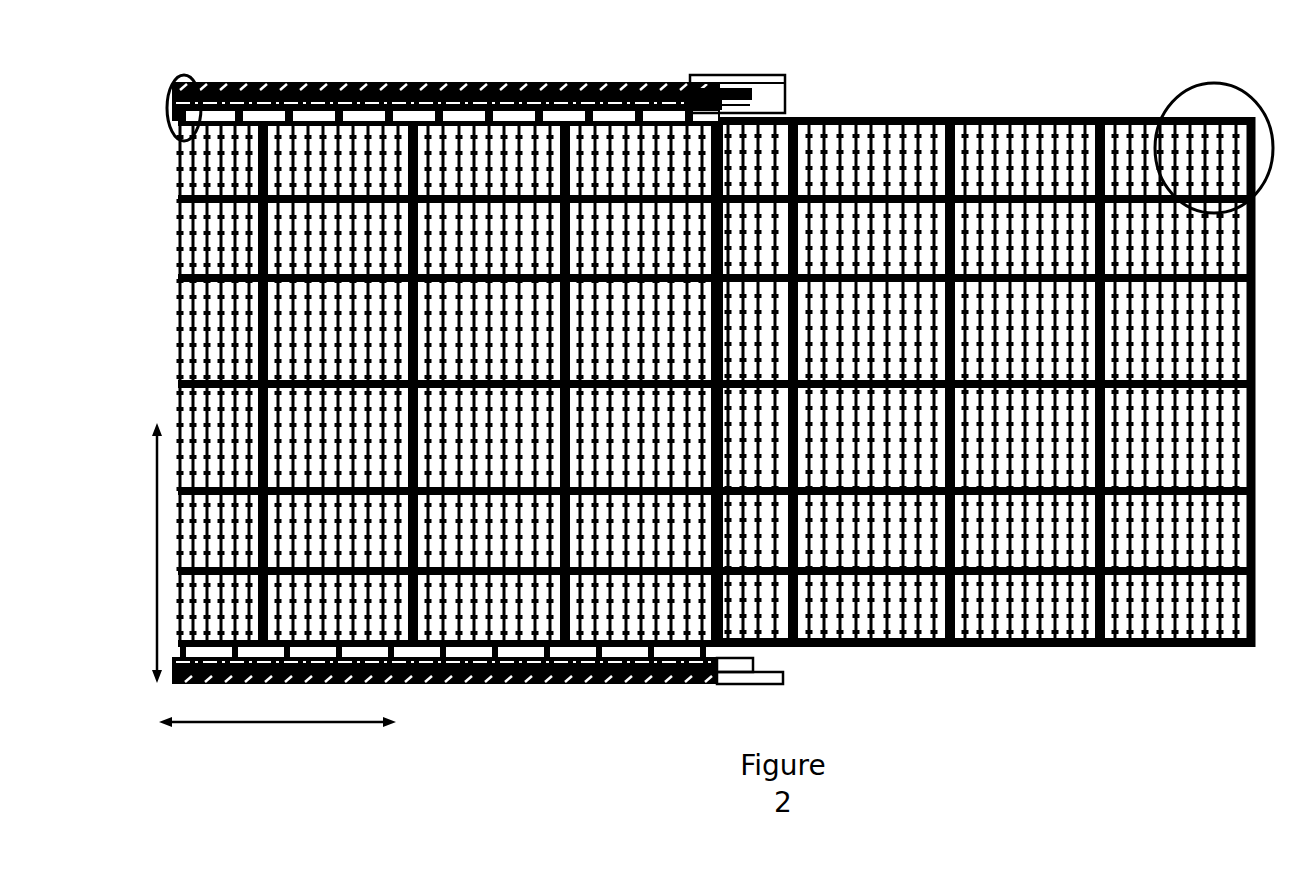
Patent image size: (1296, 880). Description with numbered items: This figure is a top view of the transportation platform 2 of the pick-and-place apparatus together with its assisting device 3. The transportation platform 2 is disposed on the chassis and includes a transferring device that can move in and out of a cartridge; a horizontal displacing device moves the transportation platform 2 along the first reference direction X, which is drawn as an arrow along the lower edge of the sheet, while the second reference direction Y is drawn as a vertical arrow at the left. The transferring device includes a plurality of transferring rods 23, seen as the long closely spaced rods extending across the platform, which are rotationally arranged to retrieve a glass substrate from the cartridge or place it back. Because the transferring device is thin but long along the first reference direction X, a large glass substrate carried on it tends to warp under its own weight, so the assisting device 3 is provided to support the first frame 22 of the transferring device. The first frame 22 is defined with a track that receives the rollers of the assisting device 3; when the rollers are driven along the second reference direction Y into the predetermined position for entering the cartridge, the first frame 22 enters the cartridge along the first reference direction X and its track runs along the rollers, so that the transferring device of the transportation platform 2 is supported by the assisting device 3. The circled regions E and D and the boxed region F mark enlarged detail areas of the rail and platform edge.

The transportation platform 2 is at (884, 120).
The assisting device 3 is at (446, 78).
The first frame 22 is at (402, 124).
The transferring rods 23 is at (340, 127).
The detail region E is at (186, 75).
The detail region F is at (788, 88).
The detail region D is at (1185, 93).
The first reference direction X is at (297, 725).
The second reference direction Y is at (153, 539).